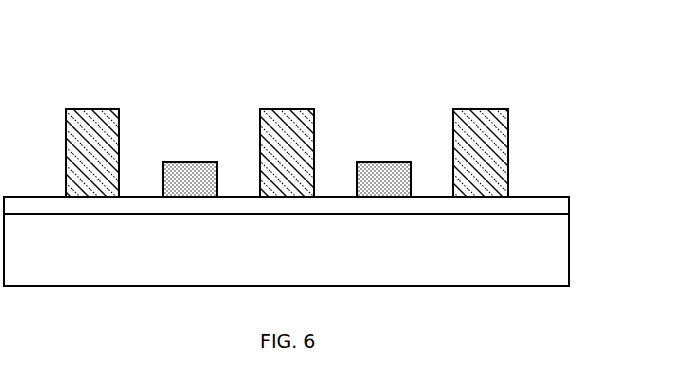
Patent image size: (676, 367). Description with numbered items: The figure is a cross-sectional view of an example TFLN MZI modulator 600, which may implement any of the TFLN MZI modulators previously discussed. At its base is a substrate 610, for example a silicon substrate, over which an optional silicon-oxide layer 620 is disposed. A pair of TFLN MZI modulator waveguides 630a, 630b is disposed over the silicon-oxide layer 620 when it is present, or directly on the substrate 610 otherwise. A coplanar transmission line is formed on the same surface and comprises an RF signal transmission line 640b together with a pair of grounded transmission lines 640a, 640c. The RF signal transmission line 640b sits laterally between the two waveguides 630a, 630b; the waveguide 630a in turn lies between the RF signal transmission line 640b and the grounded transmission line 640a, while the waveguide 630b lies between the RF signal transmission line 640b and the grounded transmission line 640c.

The TFLN MZI modulator 600 is at (378, 38).
The substrate 610 is at (304, 261).
The silicon-oxide layer 620 is at (543, 205).
The TFLN MZI modulator waveguide 630a is at (190, 162).
The TFLN MZI modulator waveguide 630b is at (383, 162).
The grounded transmission line 640a is at (93, 109).
The RF signal transmission line 640b is at (287, 109).
The grounded transmission line 640c is at (481, 109).